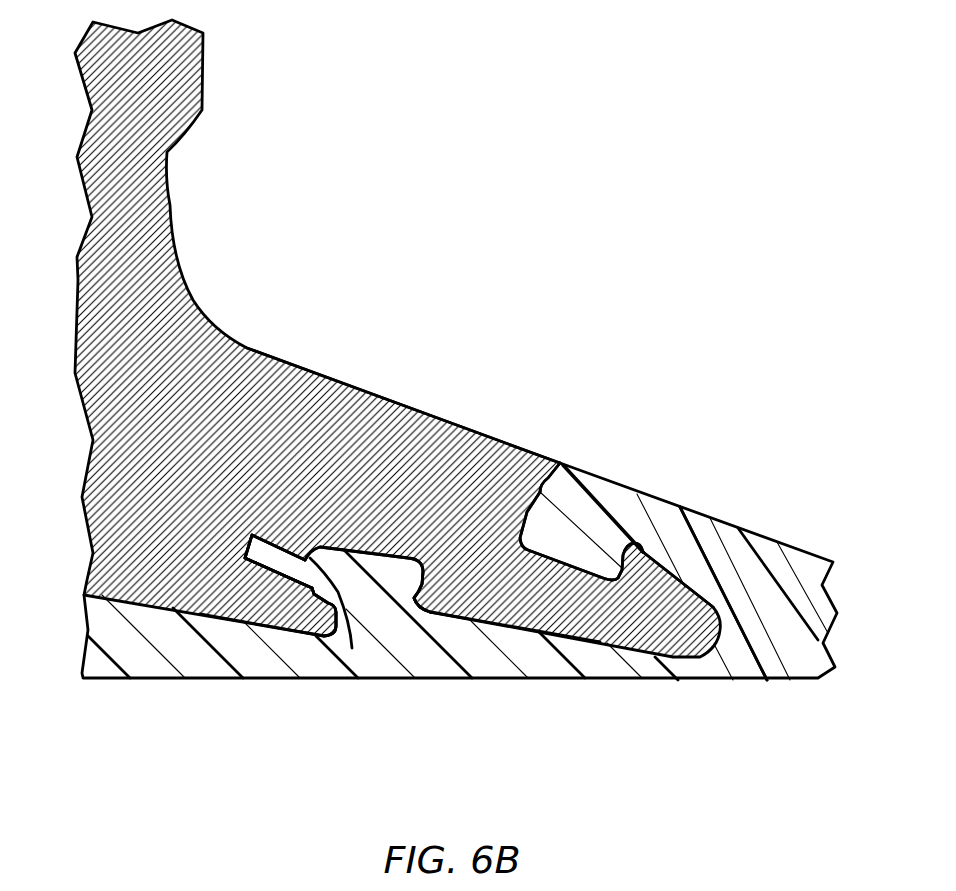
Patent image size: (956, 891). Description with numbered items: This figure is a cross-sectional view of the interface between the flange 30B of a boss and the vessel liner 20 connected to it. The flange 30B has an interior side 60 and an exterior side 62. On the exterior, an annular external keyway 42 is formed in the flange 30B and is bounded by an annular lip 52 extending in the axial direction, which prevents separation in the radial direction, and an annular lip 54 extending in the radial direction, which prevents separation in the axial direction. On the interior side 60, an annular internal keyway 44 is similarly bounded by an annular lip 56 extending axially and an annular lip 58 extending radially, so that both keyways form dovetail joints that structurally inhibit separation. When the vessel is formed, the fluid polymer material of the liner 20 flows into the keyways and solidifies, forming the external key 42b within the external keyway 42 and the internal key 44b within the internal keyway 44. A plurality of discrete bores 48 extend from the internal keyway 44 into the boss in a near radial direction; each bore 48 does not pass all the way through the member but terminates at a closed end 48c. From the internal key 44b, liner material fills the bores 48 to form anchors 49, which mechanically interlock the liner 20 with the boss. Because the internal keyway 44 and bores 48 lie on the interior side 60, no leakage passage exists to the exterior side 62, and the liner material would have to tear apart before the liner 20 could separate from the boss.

The flange 30B is at (330, 376).
The liner 20 is at (635, 502).
The exterior side 62 is at (440, 417).
The annular lip 54 is at (555, 495).
The external keyway 42 is at (540, 513).
The external key 42b is at (580, 537).
The annular lip 52 is at (683, 508).
The internal keyway 44 is at (340, 595).
The internal key 44b is at (380, 601).
The bore 48 is at (247, 562).
The closed end of bore 48c is at (252, 535).
The anchor 49 is at (280, 580).
The annular lip 58 is at (325, 628).
The annular lip 56 is at (427, 603).
The interior side 60 is at (508, 627).